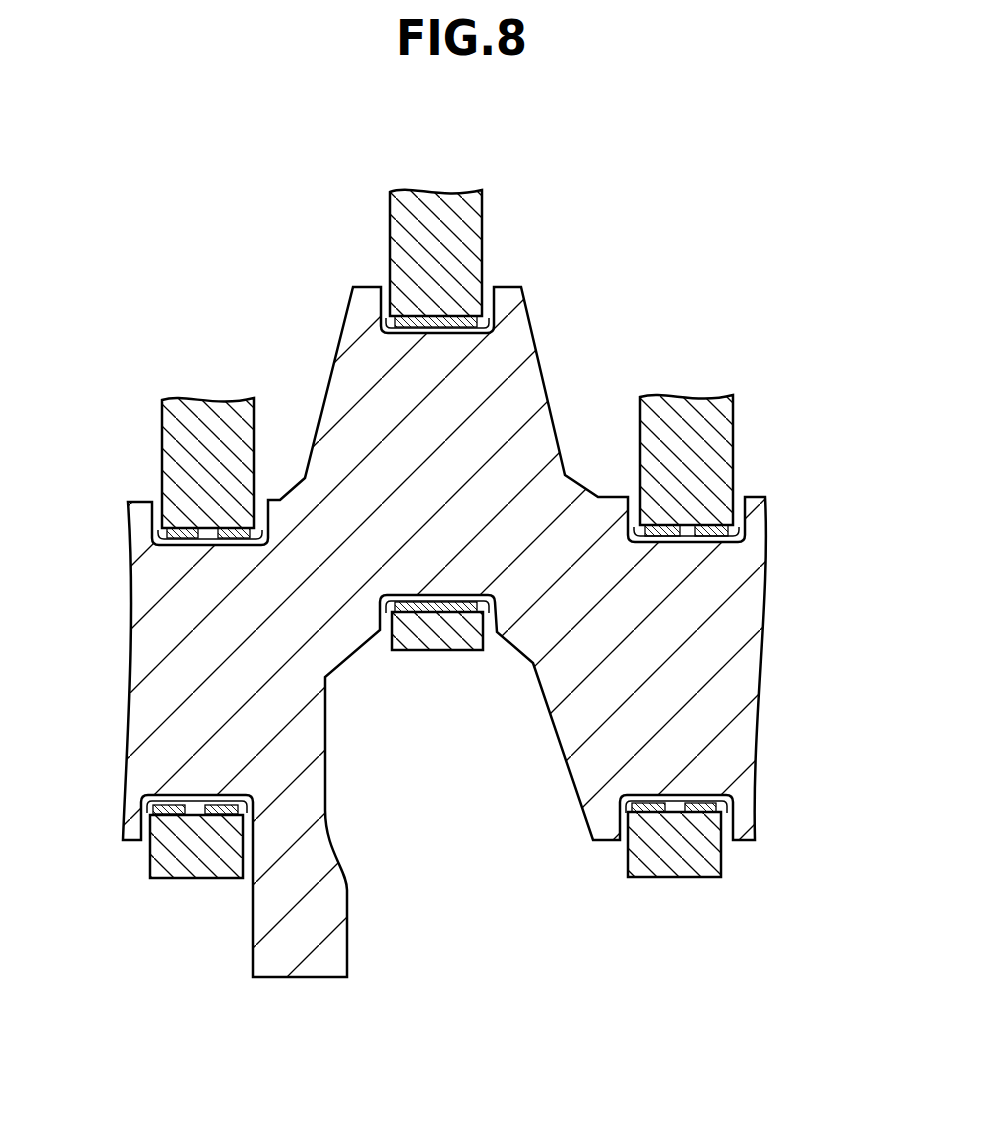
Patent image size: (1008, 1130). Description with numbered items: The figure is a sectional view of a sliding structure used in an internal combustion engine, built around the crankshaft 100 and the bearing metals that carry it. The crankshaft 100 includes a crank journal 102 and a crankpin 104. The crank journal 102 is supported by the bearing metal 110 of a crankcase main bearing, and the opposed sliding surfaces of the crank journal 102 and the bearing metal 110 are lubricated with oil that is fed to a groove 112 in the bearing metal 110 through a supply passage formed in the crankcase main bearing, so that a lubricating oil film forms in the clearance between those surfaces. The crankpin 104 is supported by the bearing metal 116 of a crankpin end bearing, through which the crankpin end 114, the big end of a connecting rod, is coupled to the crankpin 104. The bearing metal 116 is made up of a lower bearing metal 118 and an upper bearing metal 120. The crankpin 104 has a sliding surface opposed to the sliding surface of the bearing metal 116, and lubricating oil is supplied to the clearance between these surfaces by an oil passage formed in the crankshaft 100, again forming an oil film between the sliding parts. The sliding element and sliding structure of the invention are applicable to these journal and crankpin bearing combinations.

The crankshaft 100 is at (162, 713).
The crank journal 102 is at (173, 800).
The crankpin 104 is at (462, 601).
The bearing metal 110 is at (150, 532).
The groove 112 is at (207, 540).
The crankpin end 114 is at (473, 204).
The bearing metal 116 is at (492, 322).
The lower bearing metal 118 is at (410, 601).
The upper bearing metal 120 is at (383, 322).